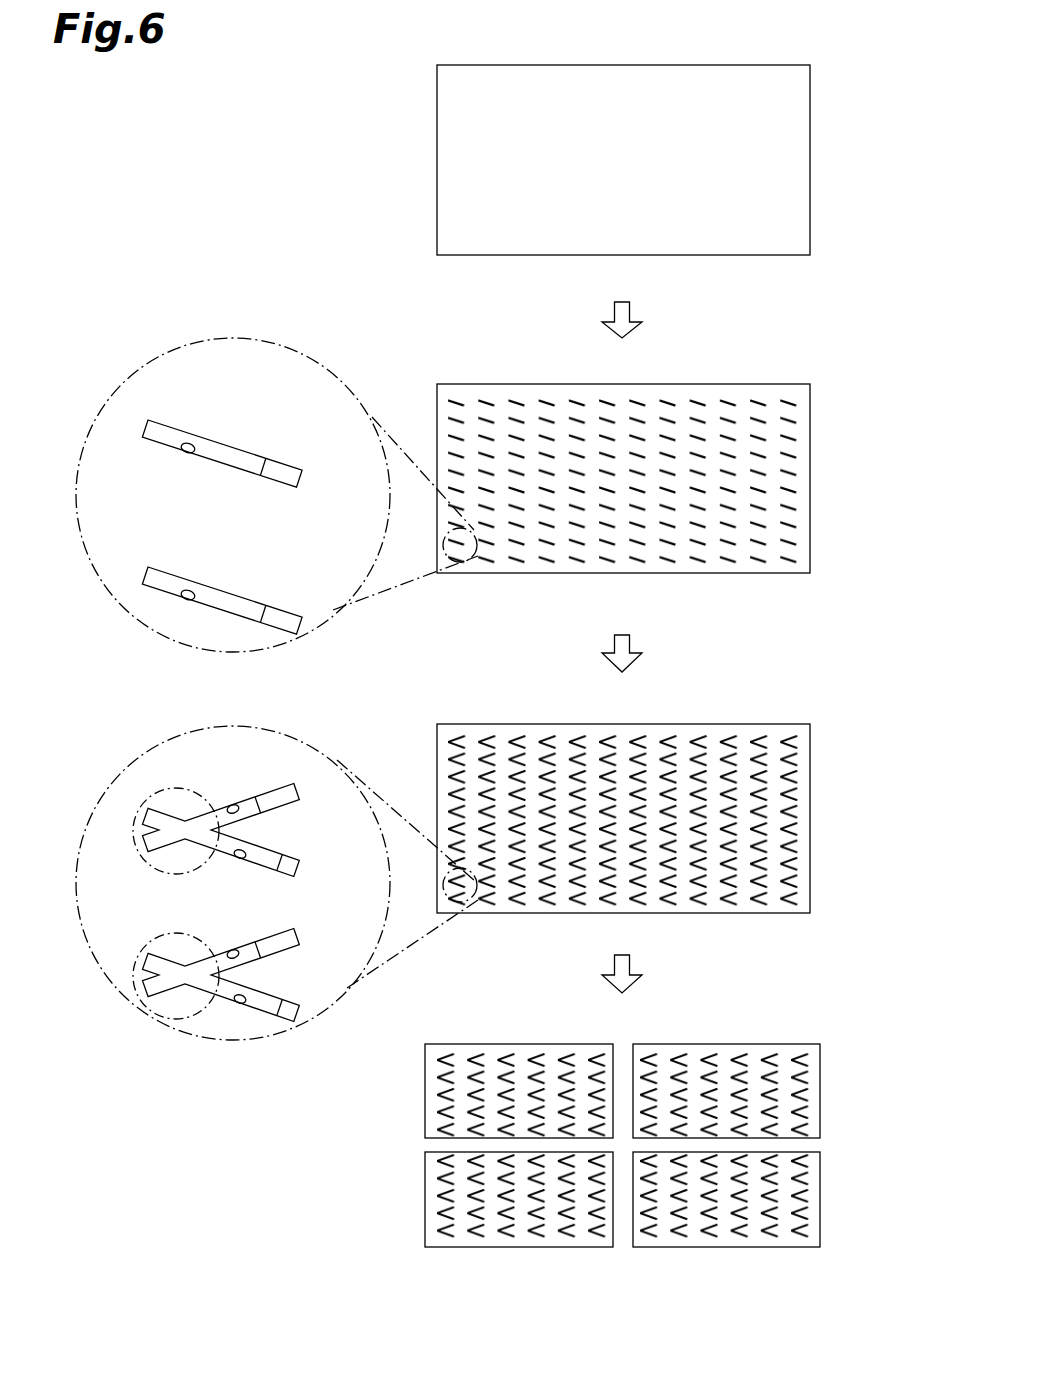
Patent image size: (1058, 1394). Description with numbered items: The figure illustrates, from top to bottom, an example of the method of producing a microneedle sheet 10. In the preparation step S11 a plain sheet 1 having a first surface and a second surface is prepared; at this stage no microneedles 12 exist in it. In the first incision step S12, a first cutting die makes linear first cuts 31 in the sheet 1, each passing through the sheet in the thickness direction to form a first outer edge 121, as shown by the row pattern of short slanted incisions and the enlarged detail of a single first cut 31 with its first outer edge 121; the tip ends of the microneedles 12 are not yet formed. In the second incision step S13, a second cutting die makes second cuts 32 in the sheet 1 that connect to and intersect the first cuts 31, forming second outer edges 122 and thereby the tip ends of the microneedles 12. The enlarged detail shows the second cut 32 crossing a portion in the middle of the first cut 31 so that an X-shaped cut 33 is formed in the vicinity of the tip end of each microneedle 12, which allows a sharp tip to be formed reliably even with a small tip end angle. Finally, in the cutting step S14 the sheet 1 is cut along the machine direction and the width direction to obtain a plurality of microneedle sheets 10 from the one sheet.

The sheet 1 is at (698, 65).
The first outer edge 121 is at (517, 400).
The second outer edge 122 is at (257, 797).
The microneedle 12 is at (515, 776).
The first cut 31 is at (183, 452).
The second cut 32 is at (230, 805).
The X-shaped cut 33 is at (150, 788).
The microneedle sheet 10 is at (505, 1043).
The preparation step S11 is at (852, 149).
The first incision step S12 is at (852, 462).
The second incision step S13 is at (854, 825).
The cutting step S14 is at (854, 1148).